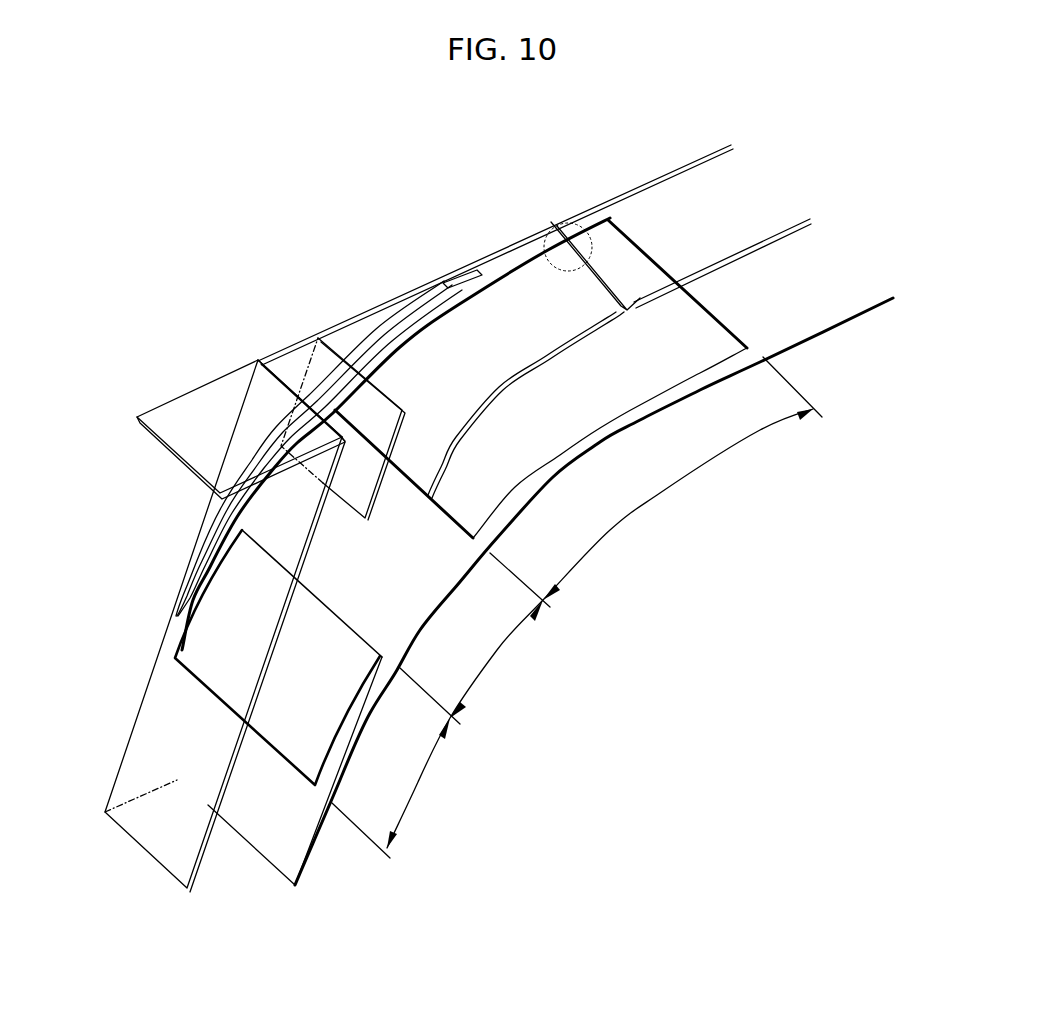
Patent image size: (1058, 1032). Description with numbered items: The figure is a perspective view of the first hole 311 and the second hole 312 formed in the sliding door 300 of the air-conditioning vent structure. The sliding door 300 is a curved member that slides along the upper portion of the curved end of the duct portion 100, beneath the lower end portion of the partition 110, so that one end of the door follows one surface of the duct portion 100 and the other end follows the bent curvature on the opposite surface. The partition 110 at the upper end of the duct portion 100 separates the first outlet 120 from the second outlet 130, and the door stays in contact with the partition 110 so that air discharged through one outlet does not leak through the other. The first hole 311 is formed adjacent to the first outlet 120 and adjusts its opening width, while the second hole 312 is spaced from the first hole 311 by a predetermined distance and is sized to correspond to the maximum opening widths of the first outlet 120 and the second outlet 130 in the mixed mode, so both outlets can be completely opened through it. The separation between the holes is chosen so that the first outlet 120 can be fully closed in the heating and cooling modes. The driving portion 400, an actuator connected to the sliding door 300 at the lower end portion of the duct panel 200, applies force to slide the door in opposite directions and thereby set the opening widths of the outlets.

The duct portion 100 is at (150, 833).
The partition 110 is at (333, 352).
The first outlet 120 is at (290, 373).
The second outlet 130 is at (362, 335).
The duct panel 200 is at (187, 408).
The sliding door 300 is at (830, 292).
The first hole 311 is at (285, 725).
The second hole 312 is at (683, 345).
The driving portion 400 is at (592, 237).